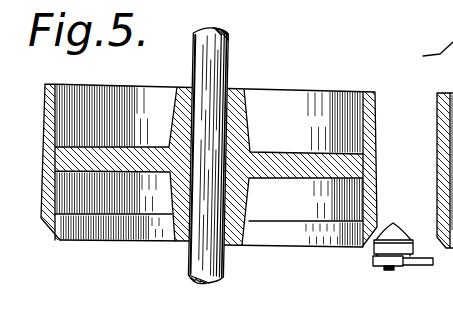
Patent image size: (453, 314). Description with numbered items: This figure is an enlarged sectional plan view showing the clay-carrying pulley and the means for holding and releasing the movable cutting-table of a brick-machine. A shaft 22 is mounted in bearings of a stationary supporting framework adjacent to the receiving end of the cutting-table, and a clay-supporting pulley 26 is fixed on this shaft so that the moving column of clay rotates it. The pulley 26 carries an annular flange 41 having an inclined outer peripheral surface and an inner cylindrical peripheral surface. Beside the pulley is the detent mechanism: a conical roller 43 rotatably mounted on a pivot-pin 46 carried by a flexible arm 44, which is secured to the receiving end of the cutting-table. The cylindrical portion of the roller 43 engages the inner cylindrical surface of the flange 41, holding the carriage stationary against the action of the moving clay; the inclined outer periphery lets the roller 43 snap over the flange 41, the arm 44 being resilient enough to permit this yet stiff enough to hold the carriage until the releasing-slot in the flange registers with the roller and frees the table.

The shaft 22 is at (240, 55).
The clay-supporting pulley 26 is at (226, 140).
The annular flange 41 is at (115, 230).
The conical roller 43 is at (395, 223).
The flexible arm 44 is at (418, 267).
The pivot-pin 46 is at (389, 269).